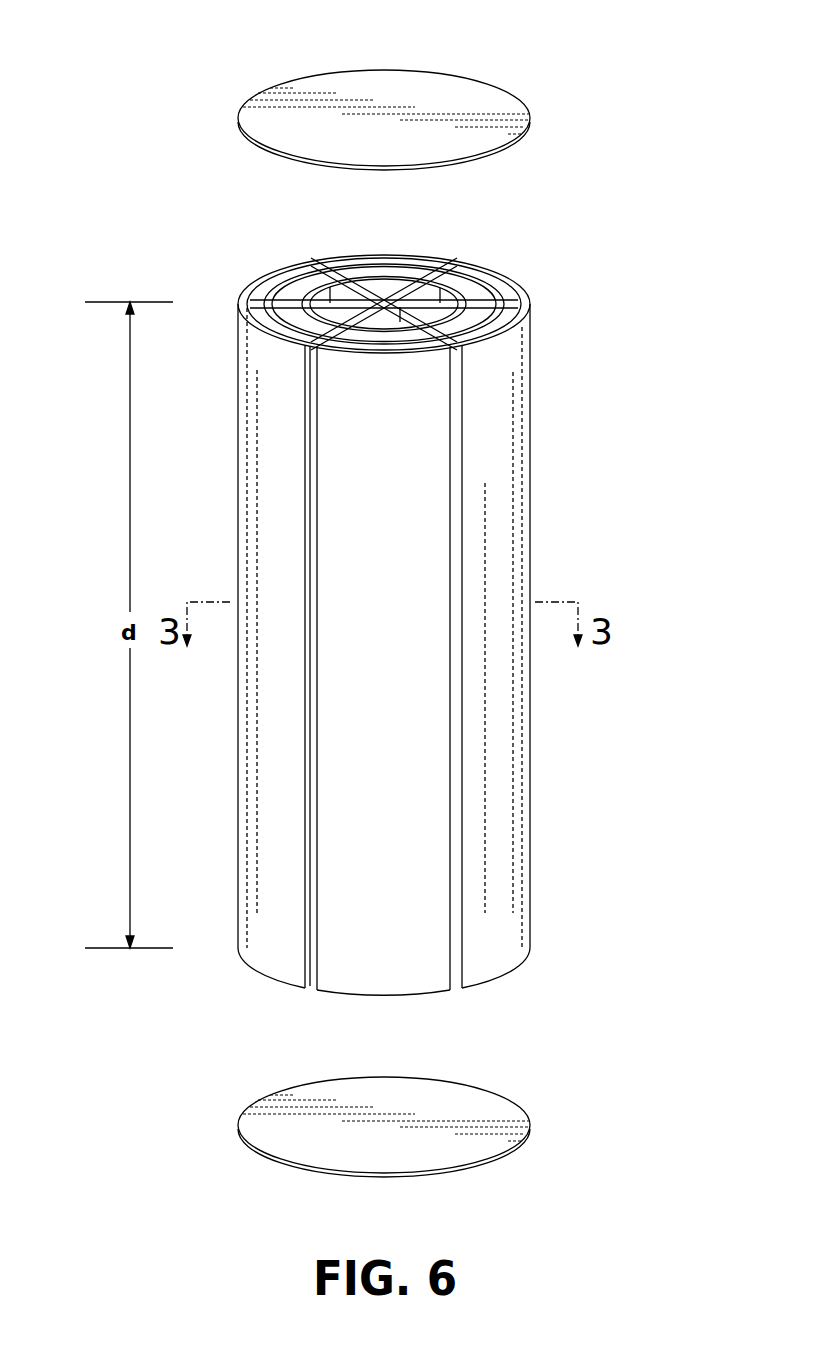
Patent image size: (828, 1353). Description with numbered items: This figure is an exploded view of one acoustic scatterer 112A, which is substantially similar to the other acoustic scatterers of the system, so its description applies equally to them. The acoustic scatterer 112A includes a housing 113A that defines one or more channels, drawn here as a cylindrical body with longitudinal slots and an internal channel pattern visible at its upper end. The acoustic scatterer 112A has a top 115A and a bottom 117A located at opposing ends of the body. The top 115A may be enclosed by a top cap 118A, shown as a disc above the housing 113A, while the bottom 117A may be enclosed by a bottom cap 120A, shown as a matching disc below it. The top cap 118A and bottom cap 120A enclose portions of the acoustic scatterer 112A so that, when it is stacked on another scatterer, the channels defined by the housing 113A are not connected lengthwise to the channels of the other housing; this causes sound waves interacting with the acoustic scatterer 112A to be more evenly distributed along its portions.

The acoustic scatterer 112A is at (448, 550).
The housing 113A is at (462, 462).
The top 115A is at (512, 363).
The bottom 117A is at (520, 849).
The top cap 118A is at (473, 93).
The bottom cap 120A is at (425, 1160).